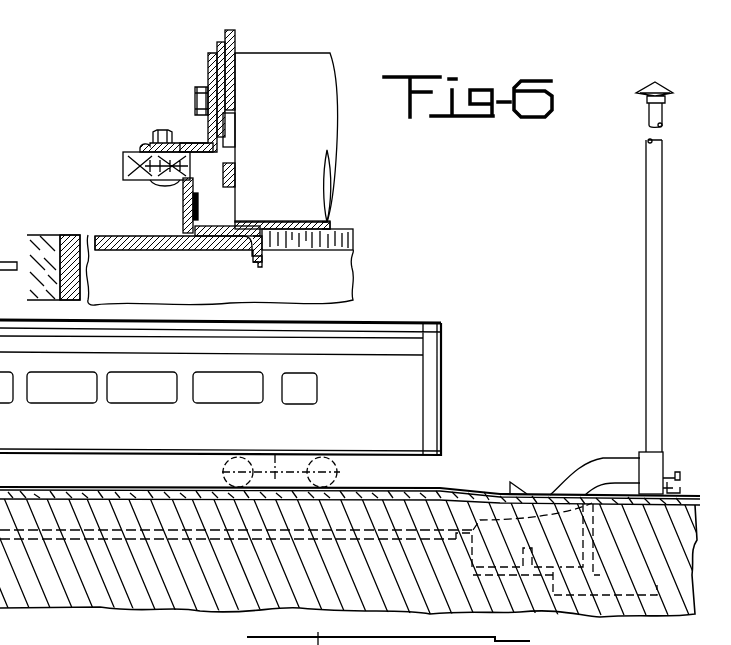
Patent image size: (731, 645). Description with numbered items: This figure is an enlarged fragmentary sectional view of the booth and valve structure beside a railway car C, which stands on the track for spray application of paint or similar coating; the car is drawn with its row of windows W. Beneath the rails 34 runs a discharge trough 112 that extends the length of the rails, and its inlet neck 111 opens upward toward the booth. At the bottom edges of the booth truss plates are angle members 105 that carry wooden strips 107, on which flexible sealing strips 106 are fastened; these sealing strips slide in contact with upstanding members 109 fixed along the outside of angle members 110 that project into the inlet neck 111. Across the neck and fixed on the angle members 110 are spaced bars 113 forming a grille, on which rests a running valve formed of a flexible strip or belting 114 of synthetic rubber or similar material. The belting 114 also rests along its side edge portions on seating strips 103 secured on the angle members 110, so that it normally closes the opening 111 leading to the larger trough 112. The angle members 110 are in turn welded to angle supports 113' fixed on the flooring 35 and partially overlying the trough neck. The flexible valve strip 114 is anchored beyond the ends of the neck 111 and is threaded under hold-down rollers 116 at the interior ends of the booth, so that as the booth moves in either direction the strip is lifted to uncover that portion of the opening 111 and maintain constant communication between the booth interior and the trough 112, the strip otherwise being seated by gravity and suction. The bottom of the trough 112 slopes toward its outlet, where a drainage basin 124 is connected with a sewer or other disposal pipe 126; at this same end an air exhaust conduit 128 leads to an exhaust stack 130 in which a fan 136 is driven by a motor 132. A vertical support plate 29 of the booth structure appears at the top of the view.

The vertical support plate 29 is at (232, 50).
The flooring 35 is at (48, 236).
The rails 34 is at (65, 487).
The seating strips 103 is at (242, 222).
The angle members 105 is at (150, 141).
The flexible sealing strips 106 is at (185, 211).
The wooden strips 107 is at (119, 173).
The upstanding members 109 is at (198, 214).
The angle members 110 is at (256, 258).
The inlet neck 111 is at (290, 262).
The discharge trough 112 is at (196, 296).
The spaced bars 113 is at (307, 248).
The angle supports 113' is at (178, 231).
The flexible strip or belting 114 is at (328, 224).
The hold-down rollers 116 is at (334, 192).
The drainage basin 124 is at (470, 560).
The disposal pipe 126 is at (630, 618).
The air exhaust conduit 128 is at (594, 462).
The exhaust stack 130 is at (658, 314).
The motor 132 is at (676, 480).
The fan 136 is at (663, 458).
The railway car C is at (399, 323).
The window W is at (231, 410).